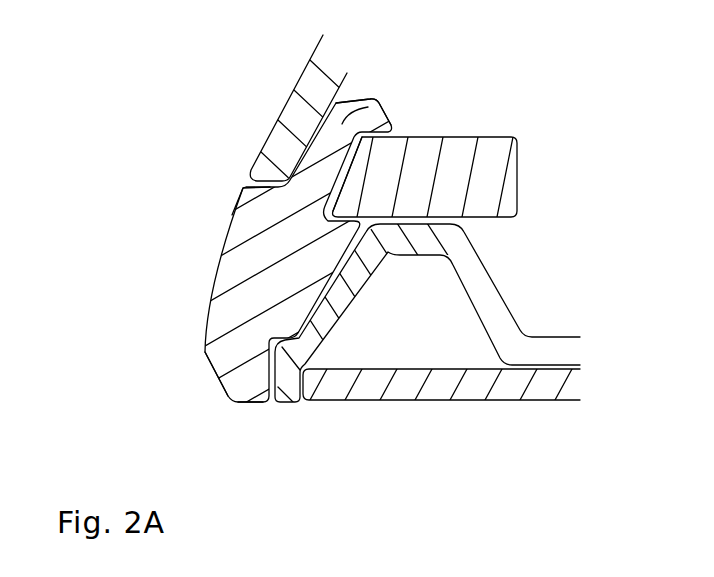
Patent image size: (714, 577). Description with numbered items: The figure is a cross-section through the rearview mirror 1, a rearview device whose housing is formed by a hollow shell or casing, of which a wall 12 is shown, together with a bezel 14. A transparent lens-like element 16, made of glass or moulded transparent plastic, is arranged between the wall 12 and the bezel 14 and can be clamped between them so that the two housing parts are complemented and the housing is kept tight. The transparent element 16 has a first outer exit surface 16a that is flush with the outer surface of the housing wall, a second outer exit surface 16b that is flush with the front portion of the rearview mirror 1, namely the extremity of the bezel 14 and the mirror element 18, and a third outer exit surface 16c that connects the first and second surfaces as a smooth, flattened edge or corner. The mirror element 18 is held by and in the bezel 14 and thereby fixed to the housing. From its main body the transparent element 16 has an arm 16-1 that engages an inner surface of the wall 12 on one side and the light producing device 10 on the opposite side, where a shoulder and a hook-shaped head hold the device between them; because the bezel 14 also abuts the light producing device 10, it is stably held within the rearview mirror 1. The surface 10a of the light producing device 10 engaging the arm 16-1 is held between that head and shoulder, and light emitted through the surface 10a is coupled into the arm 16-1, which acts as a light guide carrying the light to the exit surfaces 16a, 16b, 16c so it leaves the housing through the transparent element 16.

The rearview mirror 1 is at (145, 223).
The light producing device 10 is at (494, 148).
The surface of the light producing element 10a is at (349, 172).
The wall 12 is at (276, 136).
The bezel 14 is at (483, 289).
The transparent lens-like element 16 is at (226, 312).
The arm 16-1 is at (376, 106).
The first outer exit surface 16a is at (232, 201).
The second outer exit surface 16b is at (255, 404).
The third outer exit surface 16c is at (210, 366).
The mirror element 18 is at (437, 385).